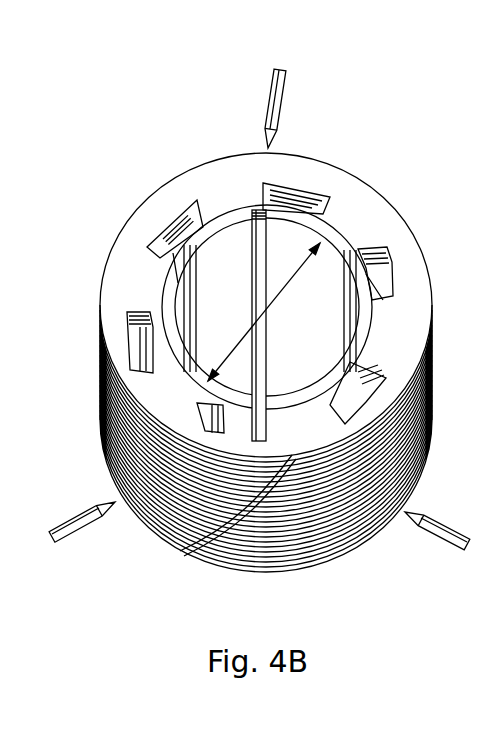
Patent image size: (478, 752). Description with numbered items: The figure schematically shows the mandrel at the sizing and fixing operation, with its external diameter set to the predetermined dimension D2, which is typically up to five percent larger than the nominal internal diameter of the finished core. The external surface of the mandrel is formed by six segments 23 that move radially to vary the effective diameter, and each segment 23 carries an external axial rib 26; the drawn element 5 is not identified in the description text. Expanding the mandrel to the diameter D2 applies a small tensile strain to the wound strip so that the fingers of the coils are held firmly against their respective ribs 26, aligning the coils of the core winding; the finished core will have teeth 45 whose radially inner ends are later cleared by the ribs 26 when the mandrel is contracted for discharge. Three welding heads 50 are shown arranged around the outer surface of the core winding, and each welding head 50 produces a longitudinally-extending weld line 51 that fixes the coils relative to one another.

The teeth 45 is at (140, 280).
The weld line 51 is at (217, 542).
The coil carrier ring 5 is at (174, 242).
The axial rib 26 is at (312, 213).
The segment 23 is at (388, 258).
The welding head 50 is at (267, 101).
The predetermined dimension D2 is at (264, 312).